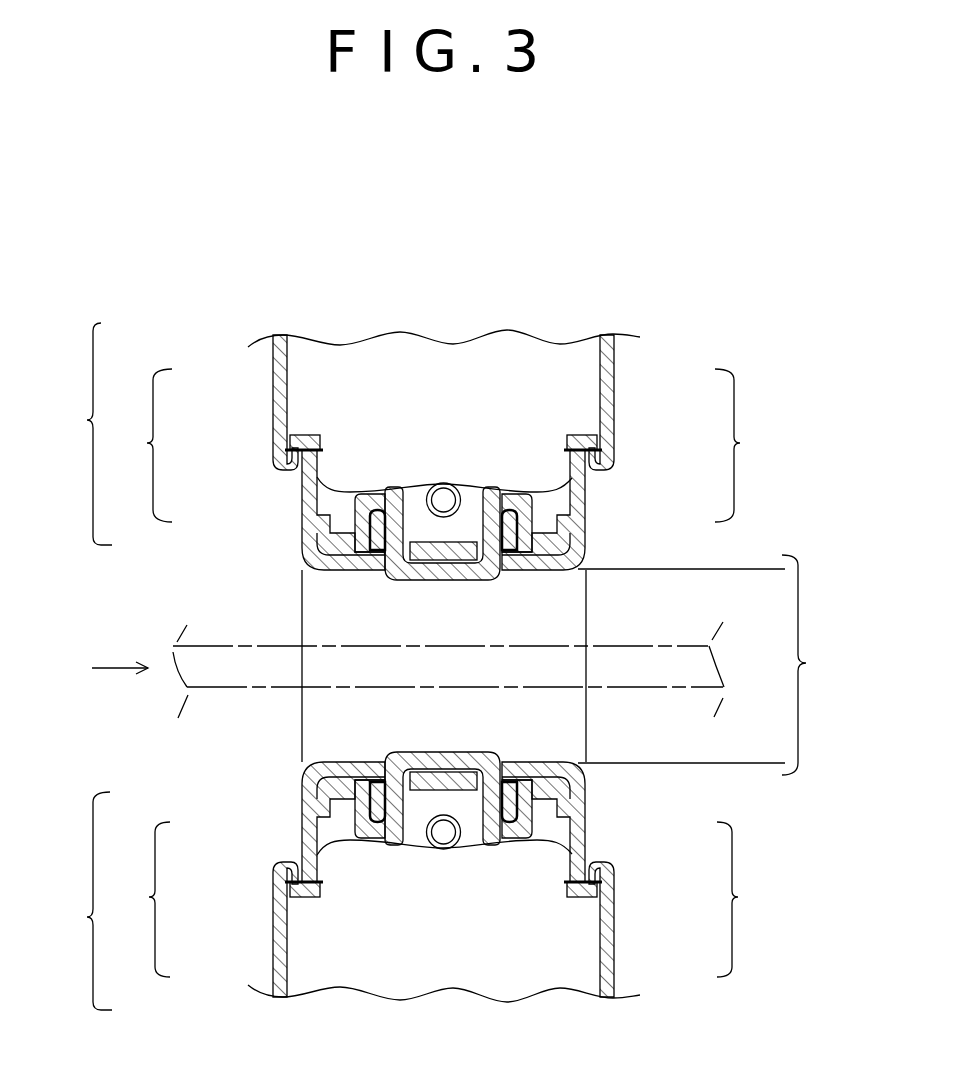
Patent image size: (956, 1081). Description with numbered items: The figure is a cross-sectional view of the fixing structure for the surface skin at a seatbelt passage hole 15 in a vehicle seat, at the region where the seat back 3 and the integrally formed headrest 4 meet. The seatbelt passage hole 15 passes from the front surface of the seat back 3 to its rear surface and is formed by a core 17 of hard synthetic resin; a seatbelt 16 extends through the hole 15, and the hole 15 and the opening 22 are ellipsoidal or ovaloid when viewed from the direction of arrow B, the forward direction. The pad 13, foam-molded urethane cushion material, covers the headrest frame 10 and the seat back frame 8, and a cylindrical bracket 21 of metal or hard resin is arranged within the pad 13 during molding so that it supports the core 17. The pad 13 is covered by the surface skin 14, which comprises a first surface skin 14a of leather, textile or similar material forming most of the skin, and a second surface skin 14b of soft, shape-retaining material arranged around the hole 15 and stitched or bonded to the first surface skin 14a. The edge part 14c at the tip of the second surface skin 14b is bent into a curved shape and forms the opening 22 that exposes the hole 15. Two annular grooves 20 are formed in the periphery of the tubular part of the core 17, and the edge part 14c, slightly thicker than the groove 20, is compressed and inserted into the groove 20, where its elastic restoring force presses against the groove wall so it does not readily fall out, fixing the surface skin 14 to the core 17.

The seat back 3 is at (88, 901).
The headrest 4 is at (88, 434).
The seat back frame 8 is at (444, 851).
The headrest frame 10 is at (442, 494).
The pad 13 is at (484, 362).
The surface skin 14 is at (444, 673).
The first surface skin 14a is at (275, 401).
The second surface skin 14b is at (303, 518).
The edge part 14c is at (374, 565).
The seatbelt passage hole 15 is at (299, 615).
The seatbelt 16 is at (237, 677).
The core 17 is at (443, 583).
The annular groove 20 is at (376, 508).
The cylindrical bracket 21 is at (459, 546).
The opening 22 is at (708, 665).
The arrow B is at (109, 669).